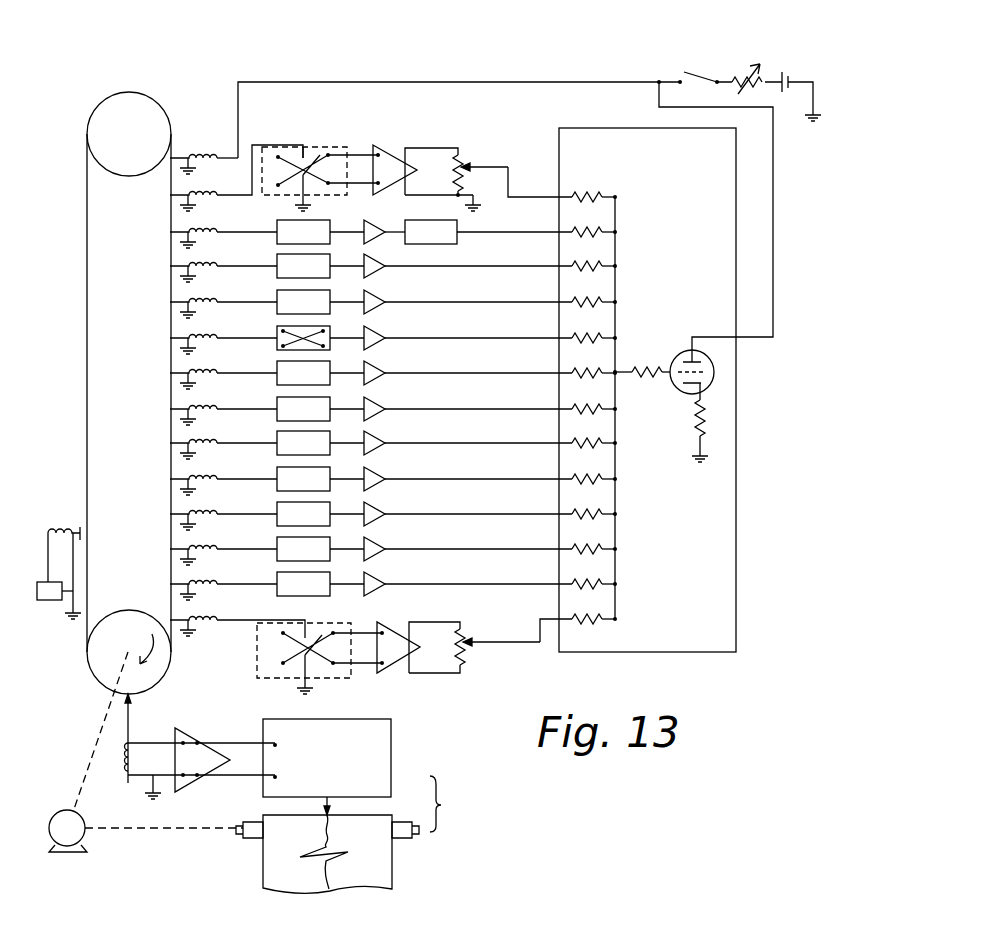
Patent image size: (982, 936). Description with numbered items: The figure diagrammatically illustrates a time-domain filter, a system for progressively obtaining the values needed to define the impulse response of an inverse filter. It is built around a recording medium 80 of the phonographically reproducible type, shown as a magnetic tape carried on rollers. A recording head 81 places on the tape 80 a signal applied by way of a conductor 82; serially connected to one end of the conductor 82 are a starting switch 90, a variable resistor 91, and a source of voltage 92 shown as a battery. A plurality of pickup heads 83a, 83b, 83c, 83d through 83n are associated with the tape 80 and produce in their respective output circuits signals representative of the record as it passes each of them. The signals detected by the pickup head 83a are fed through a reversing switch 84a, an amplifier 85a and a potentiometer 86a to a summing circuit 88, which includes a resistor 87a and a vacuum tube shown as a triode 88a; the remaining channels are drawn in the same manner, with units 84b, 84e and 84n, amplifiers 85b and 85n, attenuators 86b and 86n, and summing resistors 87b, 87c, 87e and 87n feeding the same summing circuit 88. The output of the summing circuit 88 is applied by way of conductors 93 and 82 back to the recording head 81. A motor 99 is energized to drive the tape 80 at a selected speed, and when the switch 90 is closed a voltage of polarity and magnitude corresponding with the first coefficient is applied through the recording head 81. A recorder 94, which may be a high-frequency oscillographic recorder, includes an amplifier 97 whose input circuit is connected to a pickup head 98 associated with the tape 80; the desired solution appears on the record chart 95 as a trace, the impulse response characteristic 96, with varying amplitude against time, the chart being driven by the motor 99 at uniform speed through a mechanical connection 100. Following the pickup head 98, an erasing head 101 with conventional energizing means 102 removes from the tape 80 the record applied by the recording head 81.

The recording medium 80 is at (87, 240).
The recording head 81 is at (199, 152).
The conductor 82 is at (320, 82).
The pickup head 83a is at (201, 193).
The pickup head 83b is at (205, 230).
The pickup head 83c is at (205, 265).
The pickup head 83d is at (205, 300).
The pickup head 83n is at (212, 626).
The reversing switch 84a is at (336, 148).
The switch unit 84b is at (318, 234).
The switch unit 84e is at (278, 332).
The reversing switch 84n is at (330, 680).
The amplifier 85a is at (398, 152).
The amplifier 85b is at (366, 238).
The amplifier 85n is at (396, 640).
The potentiometer 86a is at (453, 162).
The attenuator 86b is at (447, 236).
The potentiometer attenuator 86n is at (461, 640).
The resistor 87a is at (586, 195).
The summing resistor 87b is at (601, 232).
The summing resistor 87c is at (603, 268).
The summing resistor 87e is at (603, 337).
The summing resistor 87n is at (601, 619).
The summing circuit 88 is at (736, 178).
The vacuum tube 88a is at (715, 375).
The starting switch 90 is at (682, 72).
The variable resistor 91 is at (740, 72).
The source of voltage 92 is at (786, 73).
The conductor 93 is at (773, 246).
The recorder 94 is at (472, 810).
The record chart 95 is at (384, 868).
The impulse response characteristic 96 is at (302, 855).
The amplifier 97 is at (191, 742).
The pickup head 98 is at (127, 732).
The motor 99 is at (80, 841).
The mechanical connection 100 is at (185, 833).
The erasing head 101 is at (60, 530).
The energizing means 102 is at (45, 594).